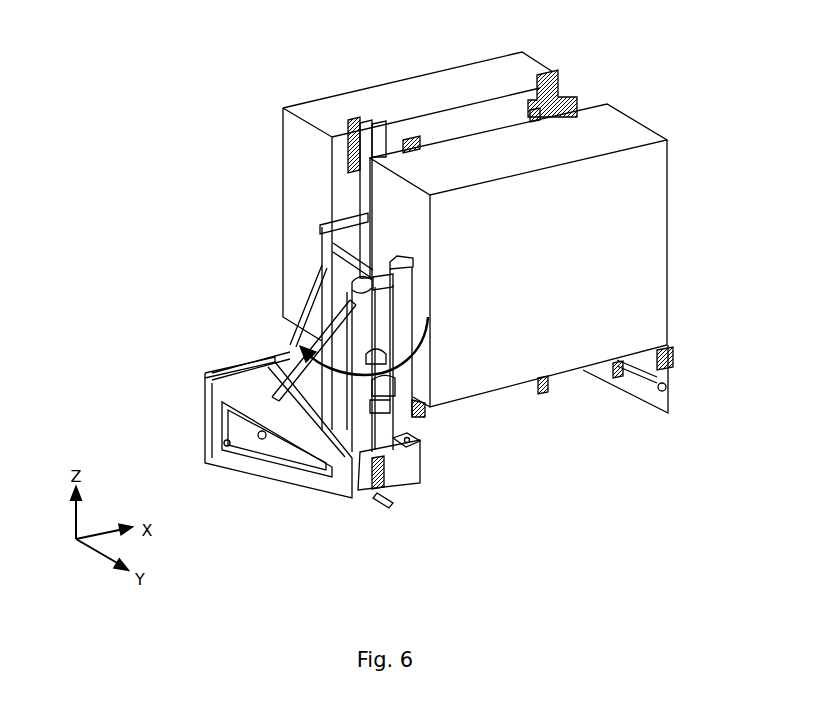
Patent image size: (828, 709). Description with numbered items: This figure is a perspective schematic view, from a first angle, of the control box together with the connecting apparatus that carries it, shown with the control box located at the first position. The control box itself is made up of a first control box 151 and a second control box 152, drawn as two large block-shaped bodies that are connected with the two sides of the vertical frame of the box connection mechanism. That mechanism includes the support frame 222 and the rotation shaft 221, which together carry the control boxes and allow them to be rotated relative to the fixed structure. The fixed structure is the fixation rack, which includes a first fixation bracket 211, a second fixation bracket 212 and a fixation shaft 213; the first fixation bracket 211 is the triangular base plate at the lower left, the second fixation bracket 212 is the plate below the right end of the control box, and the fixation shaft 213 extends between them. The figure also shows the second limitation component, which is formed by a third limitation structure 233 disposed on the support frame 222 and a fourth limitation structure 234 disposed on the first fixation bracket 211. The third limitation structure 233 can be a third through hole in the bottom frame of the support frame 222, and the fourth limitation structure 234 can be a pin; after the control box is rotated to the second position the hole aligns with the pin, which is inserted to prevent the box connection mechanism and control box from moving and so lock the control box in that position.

The first control box 151 is at (637, 122).
The second control box 152 is at (532, 65).
The first fixation bracket 211 is at (288, 485).
The second fixation bracket 212 is at (637, 388).
The fixation shaft 213 is at (362, 388).
The rotation shaft 221 is at (405, 318).
The support frame 222 is at (328, 270).
The third limitation structure 233 is at (407, 442).
The fourth limitation structure 234 is at (380, 497).